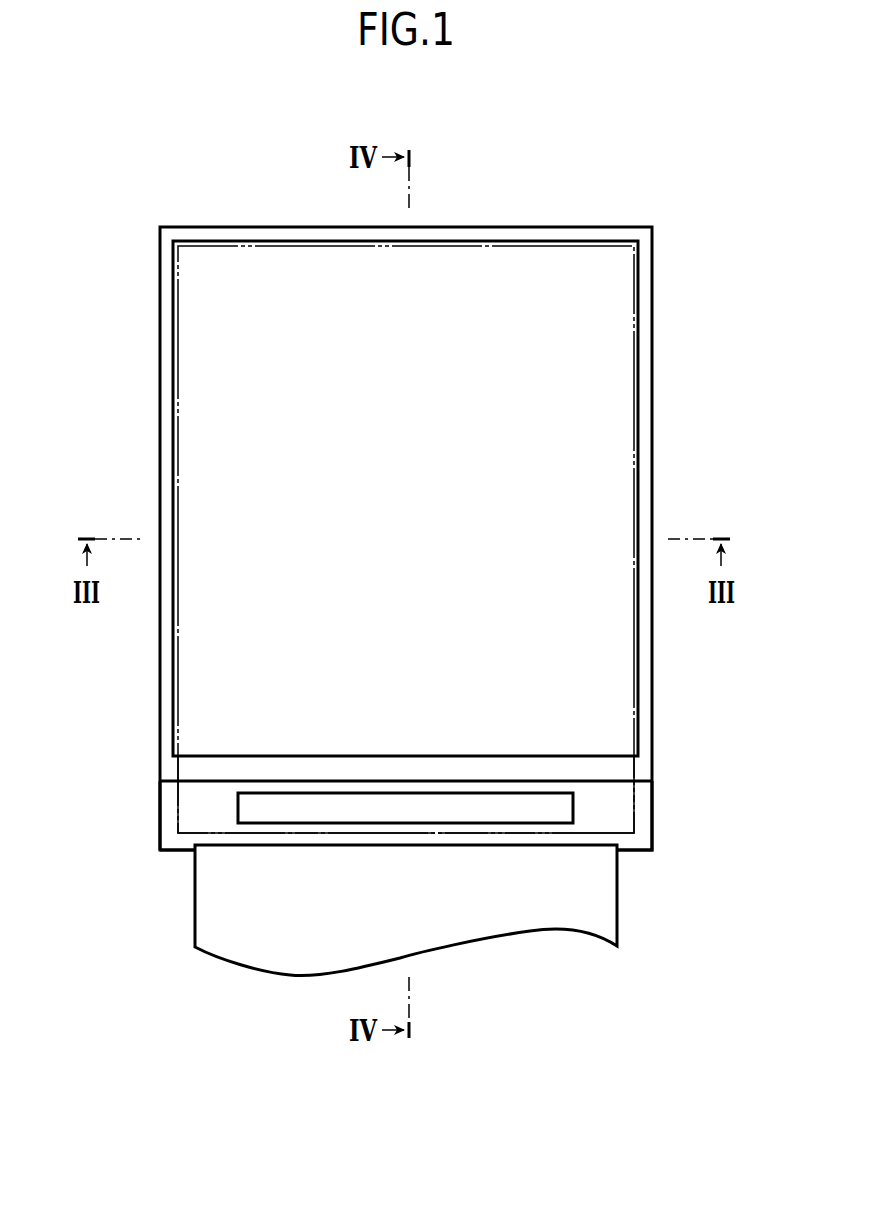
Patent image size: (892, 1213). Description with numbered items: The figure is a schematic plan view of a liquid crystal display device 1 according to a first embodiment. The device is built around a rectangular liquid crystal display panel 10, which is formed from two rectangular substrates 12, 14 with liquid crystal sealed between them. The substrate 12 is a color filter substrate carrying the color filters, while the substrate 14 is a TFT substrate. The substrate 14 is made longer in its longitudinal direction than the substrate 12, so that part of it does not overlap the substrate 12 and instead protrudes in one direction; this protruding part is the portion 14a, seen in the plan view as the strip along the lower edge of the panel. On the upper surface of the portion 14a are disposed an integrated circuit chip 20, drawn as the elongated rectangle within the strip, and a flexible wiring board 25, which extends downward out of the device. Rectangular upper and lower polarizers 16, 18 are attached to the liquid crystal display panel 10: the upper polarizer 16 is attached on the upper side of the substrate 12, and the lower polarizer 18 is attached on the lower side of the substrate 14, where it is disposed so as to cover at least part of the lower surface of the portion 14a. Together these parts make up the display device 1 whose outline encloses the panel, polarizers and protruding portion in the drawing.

The liquid crystal display device 1 is at (555, 156).
The liquid crystal display panel 10 is at (662, 333).
The substrate 12 is at (619, 769).
The substrate 14 is at (664, 798).
The portion 14a is at (619, 806).
The upper polarizer 16 is at (640, 683).
The lower polarizer 18 is at (637, 402).
The integrated circuit chip 20 is at (252, 808).
The flexible wiring board 25 is at (218, 907).